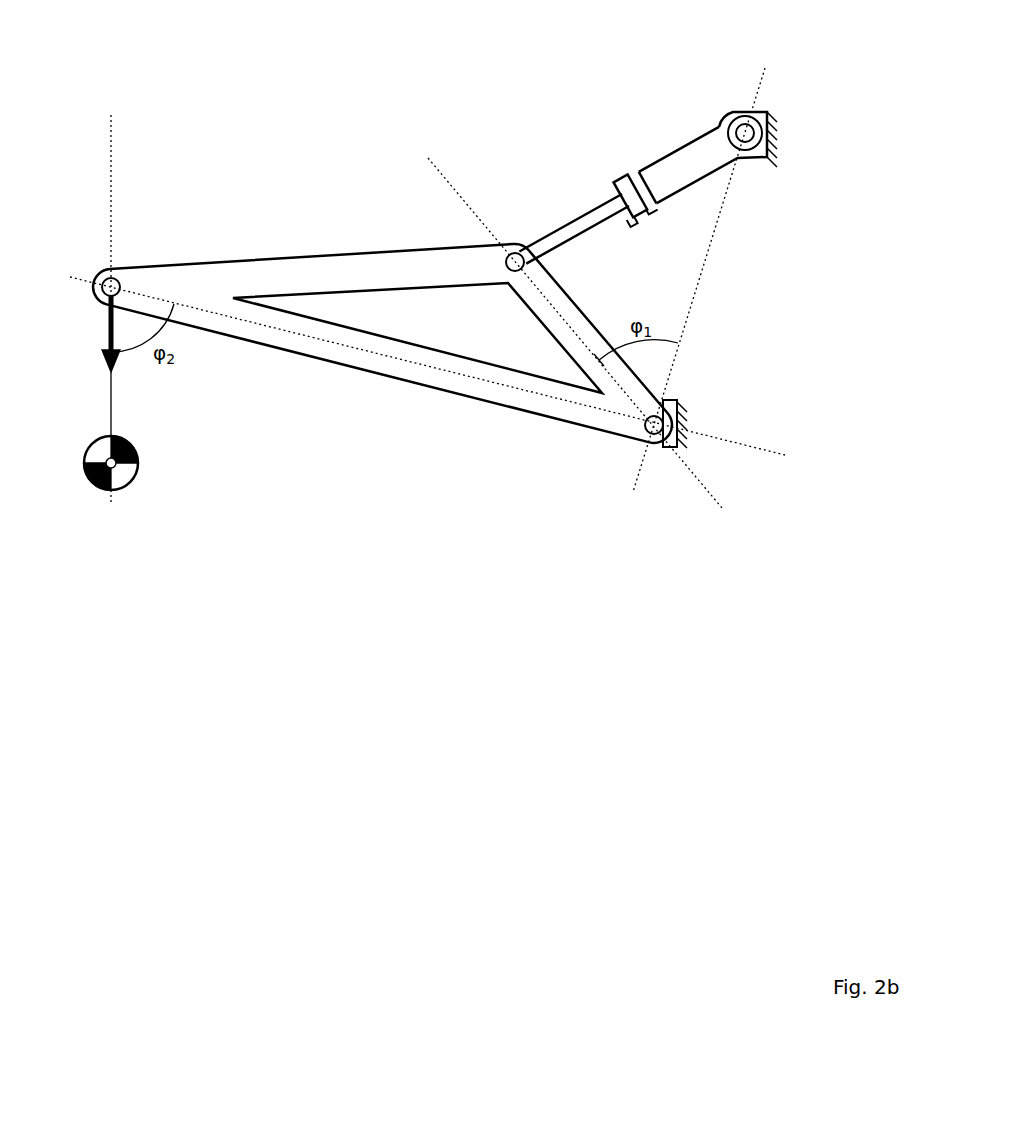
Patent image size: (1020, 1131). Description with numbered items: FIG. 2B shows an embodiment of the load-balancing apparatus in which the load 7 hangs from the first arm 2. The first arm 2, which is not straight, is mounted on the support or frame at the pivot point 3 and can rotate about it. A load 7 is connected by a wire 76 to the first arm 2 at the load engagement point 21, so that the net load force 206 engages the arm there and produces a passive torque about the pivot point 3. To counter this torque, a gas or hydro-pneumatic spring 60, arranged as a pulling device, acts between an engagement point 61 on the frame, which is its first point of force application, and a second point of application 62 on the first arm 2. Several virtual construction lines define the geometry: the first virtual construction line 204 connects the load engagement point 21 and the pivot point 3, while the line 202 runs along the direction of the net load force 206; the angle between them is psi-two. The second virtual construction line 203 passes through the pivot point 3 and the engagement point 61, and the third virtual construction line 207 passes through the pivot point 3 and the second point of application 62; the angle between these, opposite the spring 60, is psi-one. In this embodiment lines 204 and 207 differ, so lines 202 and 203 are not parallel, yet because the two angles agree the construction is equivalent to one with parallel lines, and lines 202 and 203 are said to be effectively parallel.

The first arm 2 is at (382, 366).
The load engagement point 21 is at (100, 300).
The line along the direction of the net load force 202 is at (110, 180).
The net load force 206 is at (103, 362).
The wire 76 is at (110, 397).
The load 7 is at (92, 482).
The second point of application 62 is at (508, 272).
The gas or hydro-pneumatic spring 60 is at (585, 237).
The engagement point 61 is at (757, 112).
The second virtual construction line 203 is at (687, 323).
The pivot point 3 is at (677, 400).
The third virtual construction line 207 is at (712, 493).
The first virtual construction line 204 is at (773, 455).